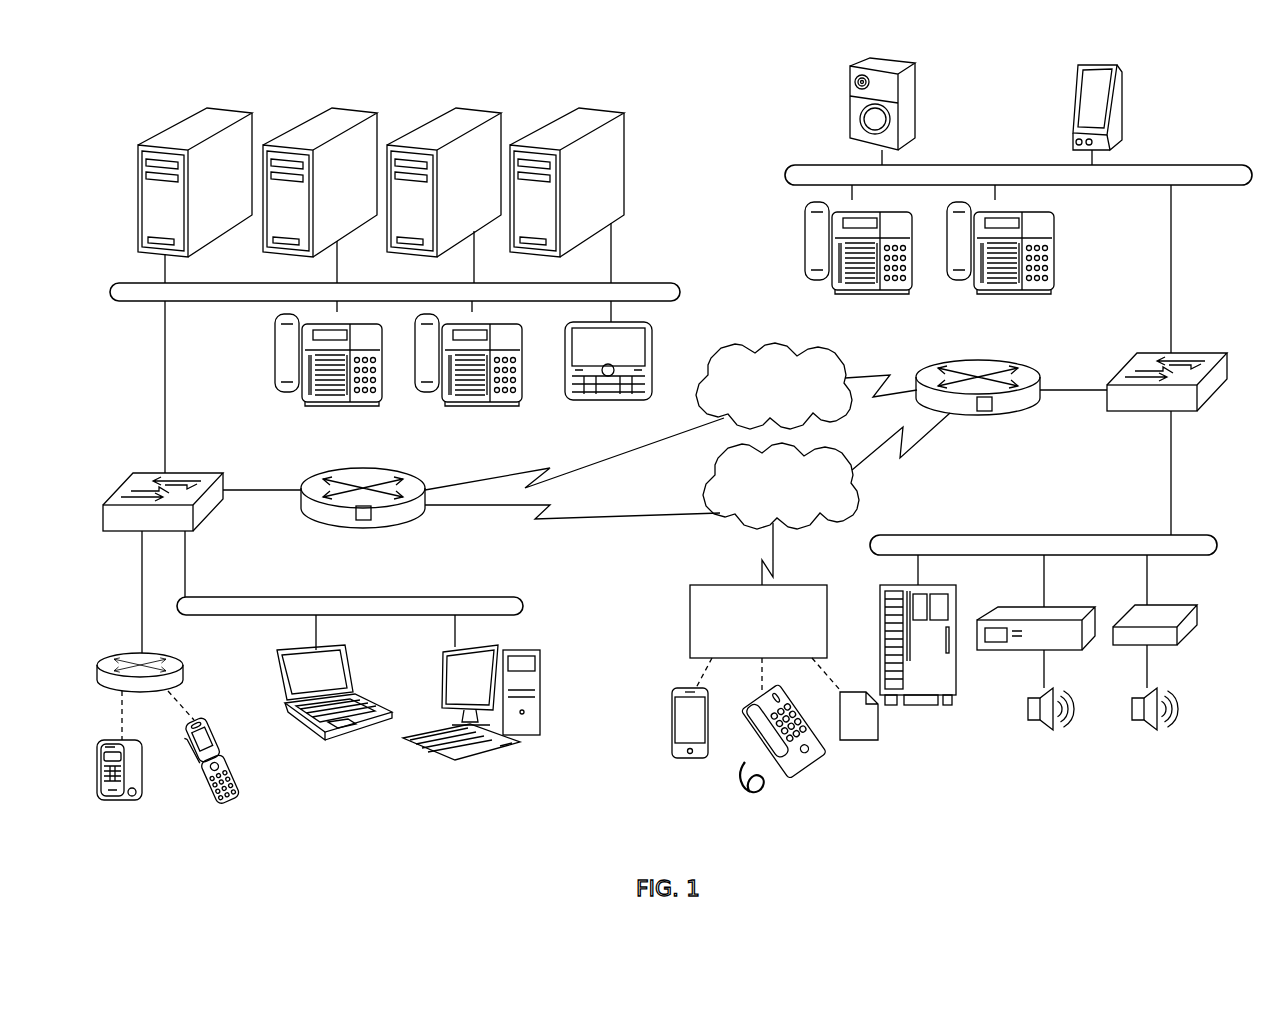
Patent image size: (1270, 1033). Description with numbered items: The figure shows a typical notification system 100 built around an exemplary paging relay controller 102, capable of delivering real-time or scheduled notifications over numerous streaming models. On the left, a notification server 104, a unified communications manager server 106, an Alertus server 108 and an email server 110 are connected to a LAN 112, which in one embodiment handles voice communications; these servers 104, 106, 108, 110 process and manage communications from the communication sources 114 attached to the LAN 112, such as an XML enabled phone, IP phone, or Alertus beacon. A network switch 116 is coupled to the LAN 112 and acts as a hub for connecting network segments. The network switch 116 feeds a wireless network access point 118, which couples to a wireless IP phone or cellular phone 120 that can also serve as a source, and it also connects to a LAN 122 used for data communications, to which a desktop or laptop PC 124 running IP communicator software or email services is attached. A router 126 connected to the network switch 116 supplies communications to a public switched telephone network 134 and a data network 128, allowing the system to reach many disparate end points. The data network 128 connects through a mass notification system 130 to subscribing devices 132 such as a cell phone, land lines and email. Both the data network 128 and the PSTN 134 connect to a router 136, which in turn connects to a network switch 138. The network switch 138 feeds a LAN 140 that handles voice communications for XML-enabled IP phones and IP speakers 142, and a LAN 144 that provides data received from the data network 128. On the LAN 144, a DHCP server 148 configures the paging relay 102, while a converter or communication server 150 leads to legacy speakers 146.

The notification system 100 is at (734, 86).
The paging relay controller 102 is at (1045, 609).
The notification server 104 is at (228, 107).
The unified communications manager server 106 is at (352, 107).
The Alertus server 108 is at (480, 107).
The email server 110 is at (602, 107).
The local area network (LAN) 112 is at (150, 302).
The communication sources 114 is at (330, 408).
The network switch 116 is at (116, 497).
The wireless network access point 118 is at (110, 656).
The wireless IP phone or cellular phone 120 is at (120, 802).
The LAN 122 is at (455, 598).
The desktop or laptop PC 124 is at (345, 648).
The router 126 is at (302, 482).
The data network 128 is at (802, 527).
The mass notification system 130 is at (690, 622).
The subscribing devices 132 is at (690, 760).
The public switched telephone network (PSTN) 134 is at (750, 345).
The router 136 is at (990, 418).
The network switch 138 is at (1135, 413).
The LAN 140 is at (1172, 168).
The IP phones and IP speakers 142 is at (915, 106).
The LAN 144 is at (1215, 537).
The speakers 146 is at (1040, 735).
The DHCP server 148 is at (920, 712).
The converter 150 is at (1153, 607).